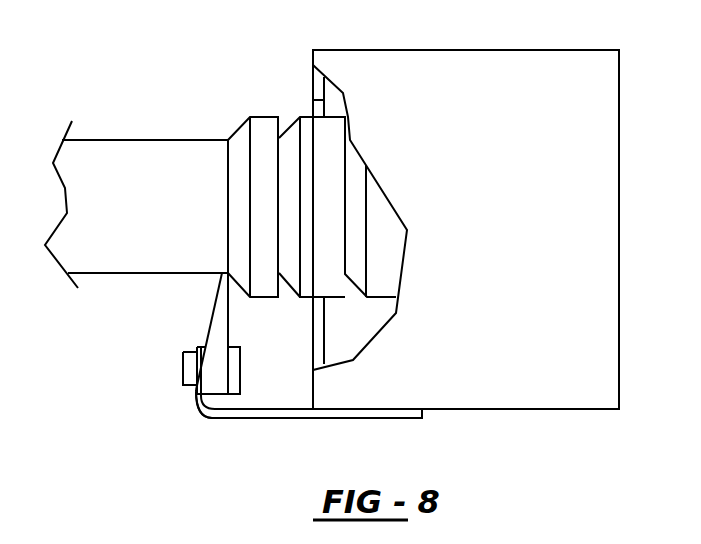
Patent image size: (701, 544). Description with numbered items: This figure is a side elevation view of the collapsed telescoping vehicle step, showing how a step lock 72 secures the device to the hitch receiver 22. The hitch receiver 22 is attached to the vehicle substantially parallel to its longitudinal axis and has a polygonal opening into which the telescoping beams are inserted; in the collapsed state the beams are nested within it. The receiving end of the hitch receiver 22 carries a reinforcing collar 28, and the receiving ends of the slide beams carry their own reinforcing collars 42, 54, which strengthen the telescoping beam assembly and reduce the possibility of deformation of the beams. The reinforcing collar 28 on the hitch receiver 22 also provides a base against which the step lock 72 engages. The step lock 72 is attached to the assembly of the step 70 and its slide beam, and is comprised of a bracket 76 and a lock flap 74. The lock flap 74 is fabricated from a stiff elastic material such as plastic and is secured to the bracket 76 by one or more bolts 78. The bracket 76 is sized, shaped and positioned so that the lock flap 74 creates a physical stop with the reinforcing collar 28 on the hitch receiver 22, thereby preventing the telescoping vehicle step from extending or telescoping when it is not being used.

The hitch receiver 22 is at (125, 140).
The reinforcing collar 28 is at (262, 117).
The reinforcing collar 42 is at (303, 117).
The reinforcing collar 54 is at (380, 270).
The step 70 is at (523, 378).
The step lock 72 is at (254, 448).
The lock flap 74 is at (213, 303).
The bracket 76 is at (207, 415).
The bolt 78 is at (183, 370).